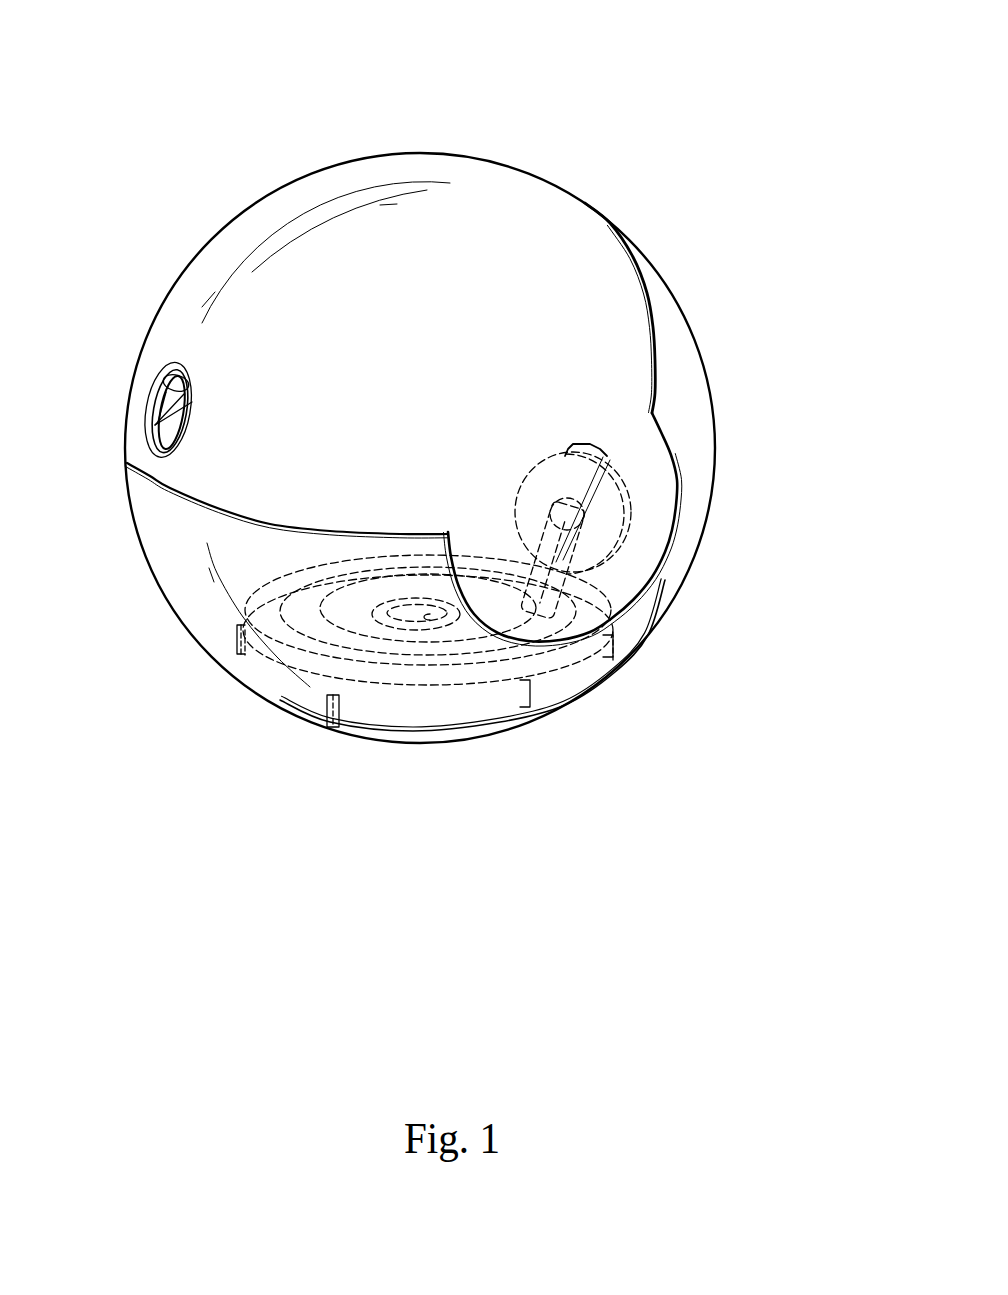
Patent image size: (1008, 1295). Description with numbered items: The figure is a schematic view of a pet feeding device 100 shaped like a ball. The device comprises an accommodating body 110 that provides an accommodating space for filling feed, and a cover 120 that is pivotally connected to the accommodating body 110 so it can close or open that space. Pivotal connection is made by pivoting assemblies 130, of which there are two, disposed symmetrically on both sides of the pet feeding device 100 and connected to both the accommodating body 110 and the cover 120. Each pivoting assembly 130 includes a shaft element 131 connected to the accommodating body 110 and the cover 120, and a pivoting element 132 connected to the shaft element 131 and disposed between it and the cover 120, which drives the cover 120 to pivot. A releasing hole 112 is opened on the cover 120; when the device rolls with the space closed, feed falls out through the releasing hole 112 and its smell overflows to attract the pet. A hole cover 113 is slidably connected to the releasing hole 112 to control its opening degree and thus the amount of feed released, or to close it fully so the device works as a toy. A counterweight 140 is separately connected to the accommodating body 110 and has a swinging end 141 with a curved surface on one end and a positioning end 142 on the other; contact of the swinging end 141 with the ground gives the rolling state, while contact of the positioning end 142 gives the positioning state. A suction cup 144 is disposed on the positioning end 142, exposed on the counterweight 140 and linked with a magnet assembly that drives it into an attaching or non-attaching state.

The pet feeding device 100 is at (108, 53).
The accommodating body 110 is at (687, 380).
The releasing hole 112 is at (170, 427).
The hole cover 113 is at (170, 383).
The cover 120 is at (487, 182).
The pivoting assemblies 130 is at (823, 474).
The shaft element 131 is at (602, 592).
The pivoting element 132 is at (600, 510).
The counterweight 140 is at (527, 822).
The swinging end 141 is at (369, 741).
The positioning end 142 is at (414, 672).
The suction cup 144 is at (460, 623).